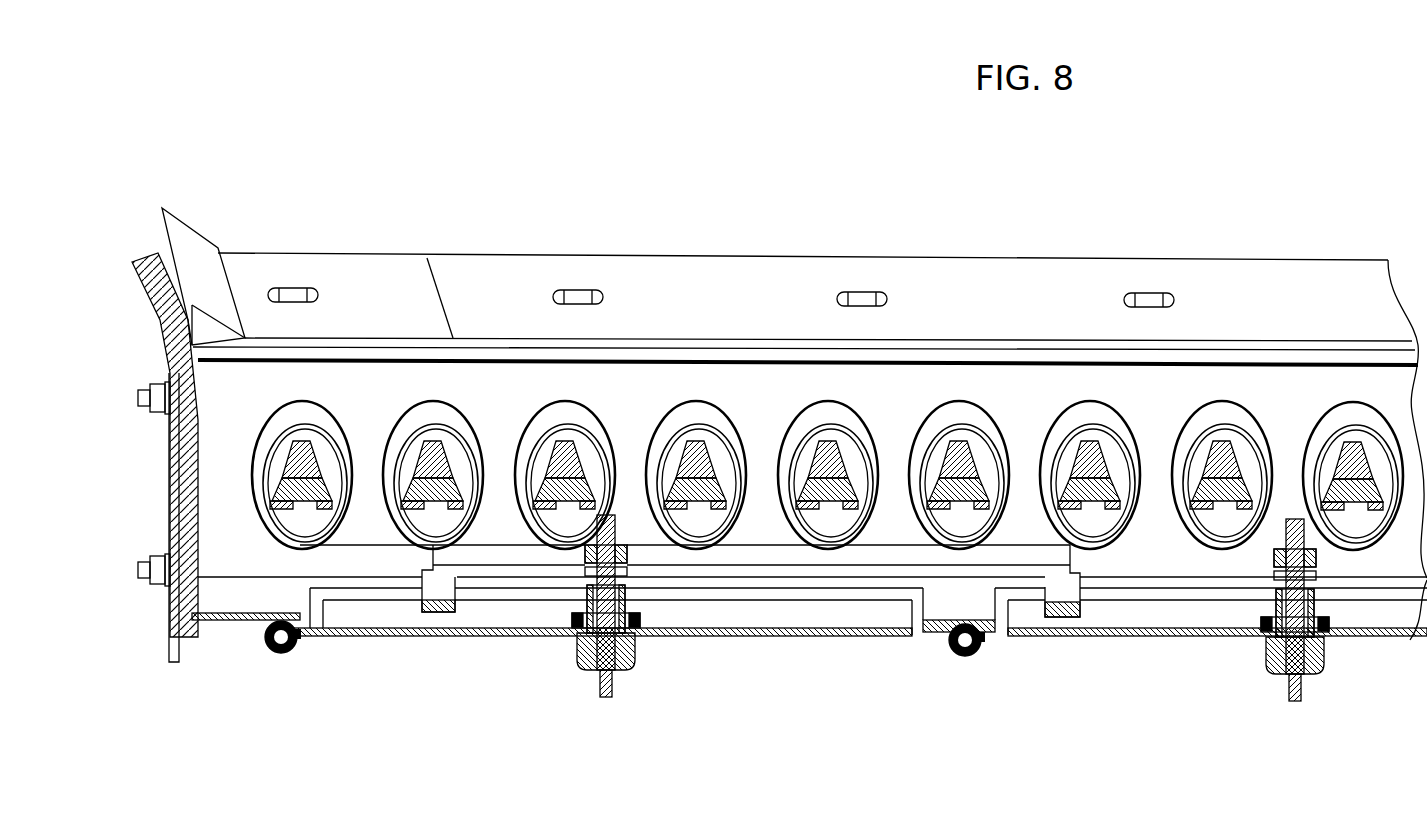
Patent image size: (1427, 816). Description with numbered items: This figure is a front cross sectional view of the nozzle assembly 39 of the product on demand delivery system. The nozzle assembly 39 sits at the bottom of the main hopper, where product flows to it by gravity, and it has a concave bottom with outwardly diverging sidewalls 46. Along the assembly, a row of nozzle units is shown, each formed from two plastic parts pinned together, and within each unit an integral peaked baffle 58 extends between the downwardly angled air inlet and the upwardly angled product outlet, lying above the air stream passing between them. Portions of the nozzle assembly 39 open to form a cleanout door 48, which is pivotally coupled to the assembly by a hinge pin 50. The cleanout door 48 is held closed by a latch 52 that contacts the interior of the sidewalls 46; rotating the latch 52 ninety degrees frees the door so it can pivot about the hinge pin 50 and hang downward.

The nozzle assembly 39 is at (205, 494).
The outwardly diverging sidewalls 46 is at (508, 401).
The cleanout door 48 is at (463, 637).
The hinge pin 50 is at (283, 656).
The latch 52 is at (570, 686).
The baffle 58 is at (429, 445).